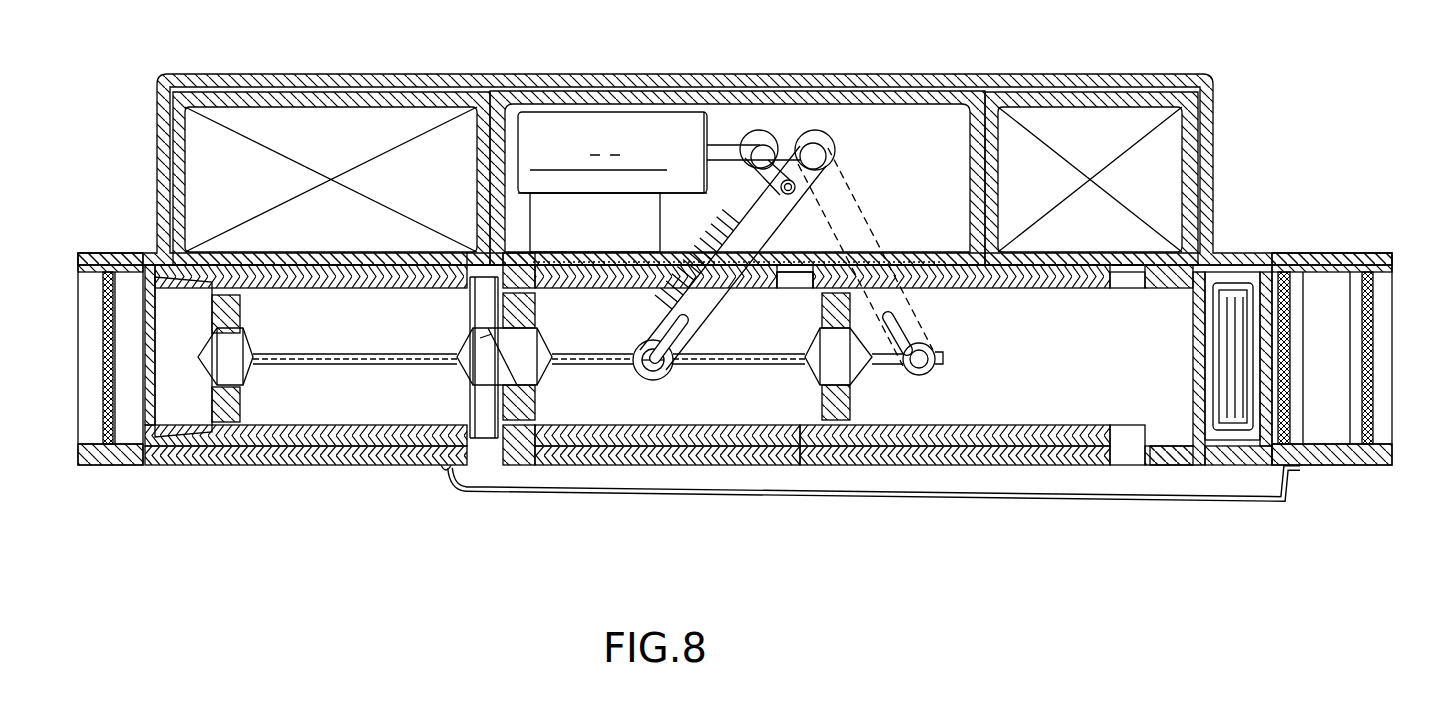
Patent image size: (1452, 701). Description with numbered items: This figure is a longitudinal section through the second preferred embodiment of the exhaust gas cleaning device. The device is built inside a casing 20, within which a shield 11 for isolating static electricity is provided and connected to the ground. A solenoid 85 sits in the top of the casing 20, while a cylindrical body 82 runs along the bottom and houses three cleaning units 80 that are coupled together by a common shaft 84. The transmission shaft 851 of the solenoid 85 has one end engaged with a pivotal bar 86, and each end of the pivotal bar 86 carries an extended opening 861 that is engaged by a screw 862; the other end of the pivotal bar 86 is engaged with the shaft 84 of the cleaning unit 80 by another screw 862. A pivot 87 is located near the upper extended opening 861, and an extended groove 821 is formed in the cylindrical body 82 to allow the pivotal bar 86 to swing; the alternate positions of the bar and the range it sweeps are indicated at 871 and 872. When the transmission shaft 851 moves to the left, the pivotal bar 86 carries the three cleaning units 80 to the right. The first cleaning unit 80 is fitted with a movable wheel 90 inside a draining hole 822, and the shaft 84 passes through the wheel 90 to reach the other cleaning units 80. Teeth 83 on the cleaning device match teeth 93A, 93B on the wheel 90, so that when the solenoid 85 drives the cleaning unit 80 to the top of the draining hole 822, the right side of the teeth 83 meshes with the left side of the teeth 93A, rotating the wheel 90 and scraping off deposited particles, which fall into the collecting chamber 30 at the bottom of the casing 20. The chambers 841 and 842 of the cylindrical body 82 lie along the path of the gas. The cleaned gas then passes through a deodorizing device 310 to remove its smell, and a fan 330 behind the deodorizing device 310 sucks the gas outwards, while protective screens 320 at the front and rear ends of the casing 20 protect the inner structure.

The shield 11 is at (1205, 178).
The casing 20 is at (1228, 216).
The collecting chamber 30 is at (966, 496).
The cleaning unit 80 is at (223, 405).
The cylindrical body 82 is at (304, 288).
The teeth 83 is at (250, 330).
The shaft 84 is at (345, 355).
The solenoid 85 is at (592, 128).
The transmission shaft 851 is at (725, 150).
The pivotal bar 86 is at (820, 143).
The extended opening 861 is at (822, 170).
The screw 862 is at (828, 152).
The pivot 87 is at (780, 190).
The swing position 871 is at (862, 258).
The swing range 872 is at (792, 256).
The movable wheel 90 is at (482, 405).
The teeth 93A is at (460, 347).
The teeth 93B is at (492, 345).
The deodorizing device 310 is at (1228, 425).
The protective screen 320 is at (112, 443).
The fan 330 is at (1333, 427).
The extended groove 821 is at (752, 289).
The draining hole 822 is at (443, 470).
The chamber 841 is at (780, 358).
The chamber 842 is at (1037, 357).